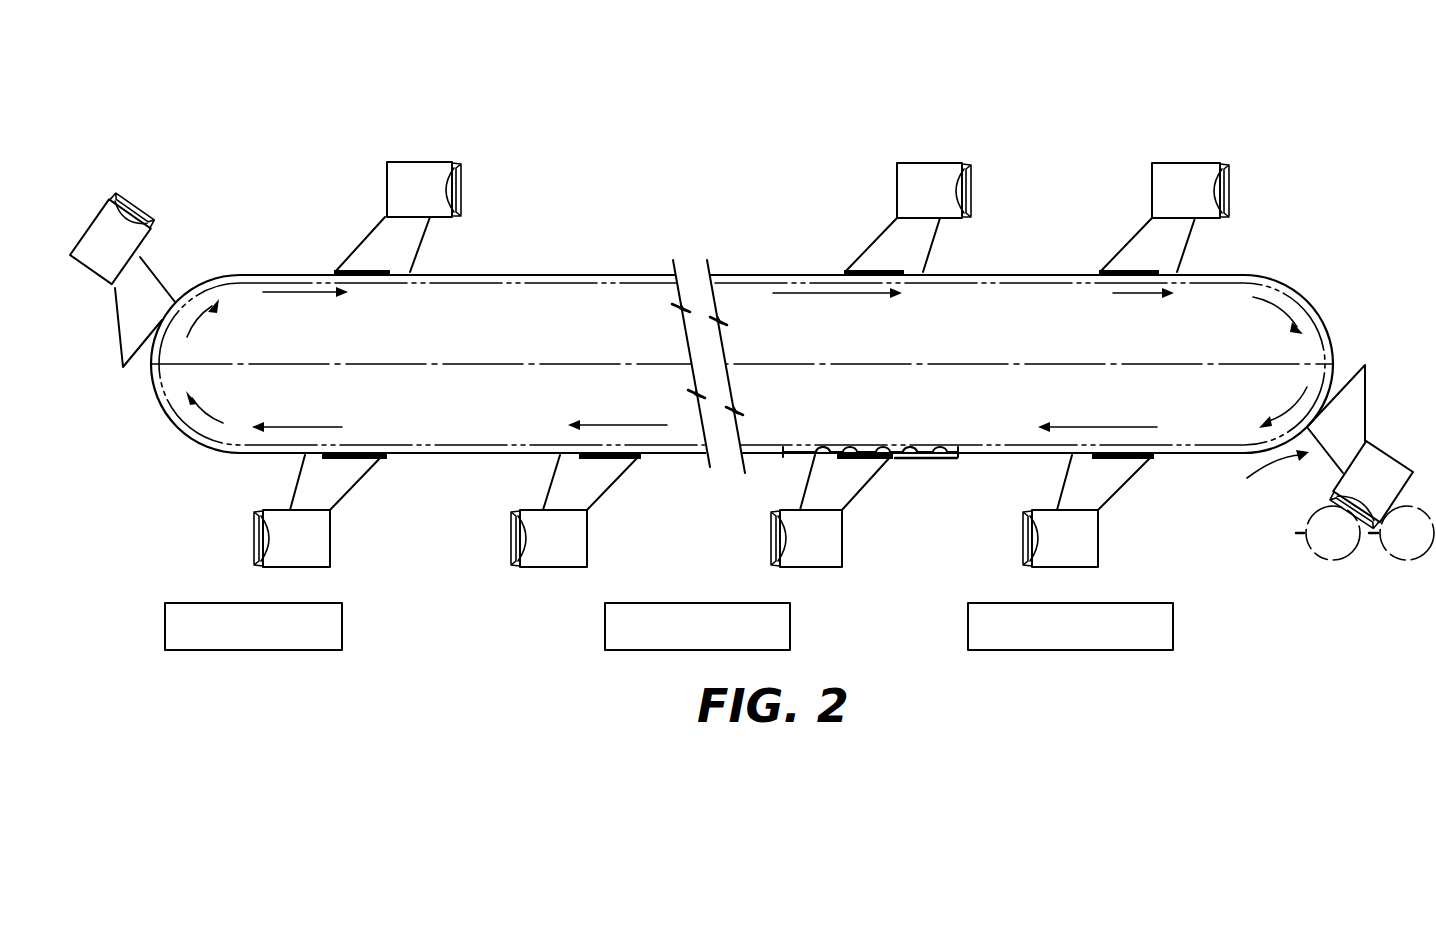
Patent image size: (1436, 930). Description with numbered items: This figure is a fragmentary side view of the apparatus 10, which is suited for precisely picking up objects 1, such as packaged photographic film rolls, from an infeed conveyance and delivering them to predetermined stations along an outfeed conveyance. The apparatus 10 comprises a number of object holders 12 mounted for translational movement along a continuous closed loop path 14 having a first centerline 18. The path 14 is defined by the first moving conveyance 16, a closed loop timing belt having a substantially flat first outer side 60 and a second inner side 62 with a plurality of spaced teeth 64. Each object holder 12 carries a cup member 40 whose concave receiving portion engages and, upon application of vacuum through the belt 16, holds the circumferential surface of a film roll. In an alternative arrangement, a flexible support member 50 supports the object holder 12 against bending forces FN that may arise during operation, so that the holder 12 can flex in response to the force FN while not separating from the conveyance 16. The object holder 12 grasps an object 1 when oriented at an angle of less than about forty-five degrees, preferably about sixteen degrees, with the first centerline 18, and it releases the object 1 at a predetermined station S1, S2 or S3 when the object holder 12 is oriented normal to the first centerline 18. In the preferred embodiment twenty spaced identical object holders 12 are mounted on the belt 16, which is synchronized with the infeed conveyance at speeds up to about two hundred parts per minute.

The apparatus 10 is at (1066, 92).
The object holder 12 is at (413, 150).
The continuous closed loop path 14 is at (287, 293).
The first moving conveyance 16 is at (1242, 273).
The first centerline 18 is at (1180, 367).
The cup member 40 is at (967, 185).
The flexible support member 50 is at (1365, 380).
The first outer side 60 is at (923, 459).
The second inner side 62 is at (912, 448).
The spaced teeth 64 is at (803, 448).
The object 1 is at (1328, 561).
The bending force FN is at (1268, 477).
The predetermined station S1 is at (1017, 650).
The predetermined station S2 is at (662, 650).
The predetermined station S3 is at (273, 650).